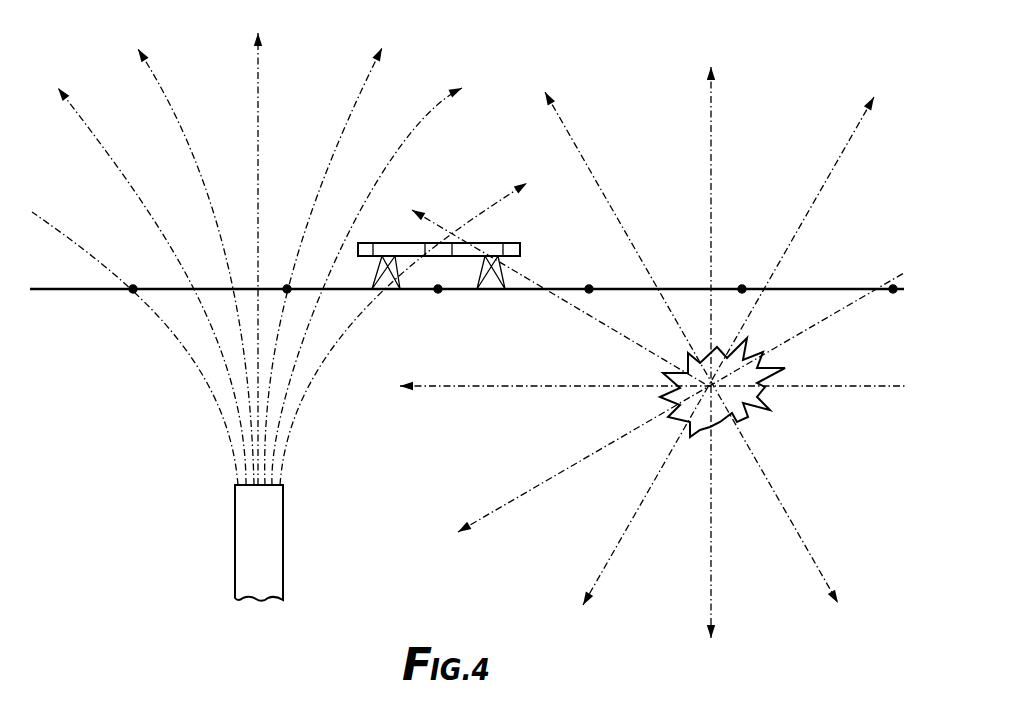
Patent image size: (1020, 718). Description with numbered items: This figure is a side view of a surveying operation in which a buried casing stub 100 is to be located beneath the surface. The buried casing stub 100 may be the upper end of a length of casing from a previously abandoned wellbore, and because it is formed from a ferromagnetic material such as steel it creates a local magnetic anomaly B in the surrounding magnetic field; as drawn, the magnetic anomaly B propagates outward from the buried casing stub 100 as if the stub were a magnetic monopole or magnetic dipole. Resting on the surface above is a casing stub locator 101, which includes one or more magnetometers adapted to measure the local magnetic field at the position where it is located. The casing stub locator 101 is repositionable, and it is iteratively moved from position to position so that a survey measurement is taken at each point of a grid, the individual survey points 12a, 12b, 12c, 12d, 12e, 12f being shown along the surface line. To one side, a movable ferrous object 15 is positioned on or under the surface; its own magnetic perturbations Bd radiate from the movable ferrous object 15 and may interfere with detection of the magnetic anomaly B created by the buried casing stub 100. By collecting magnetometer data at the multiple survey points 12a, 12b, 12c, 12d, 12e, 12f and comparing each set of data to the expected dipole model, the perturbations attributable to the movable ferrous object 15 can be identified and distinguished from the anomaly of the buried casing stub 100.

The survey point 12a is at (134, 286).
The survey point 12b is at (290, 286).
The survey point 12c is at (440, 293).
The survey point 12d is at (588, 293).
The survey point 12e is at (742, 285).
The survey point 12f is at (893, 293).
The movable ferrous object 15 is at (775, 400).
The buried casing stub 100 is at (232, 522).
The casing stub locator 101 is at (500, 241).
The magnetic anomaly B is at (483, 218).
The magnetic perturbations of movable ferrous object Bd is at (530, 279).